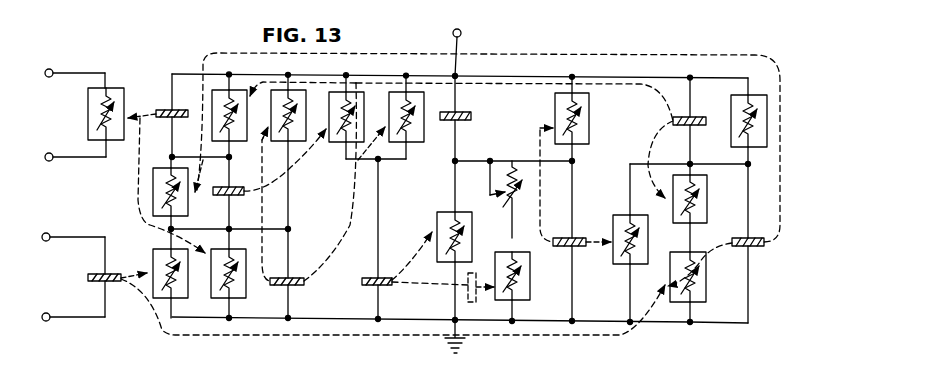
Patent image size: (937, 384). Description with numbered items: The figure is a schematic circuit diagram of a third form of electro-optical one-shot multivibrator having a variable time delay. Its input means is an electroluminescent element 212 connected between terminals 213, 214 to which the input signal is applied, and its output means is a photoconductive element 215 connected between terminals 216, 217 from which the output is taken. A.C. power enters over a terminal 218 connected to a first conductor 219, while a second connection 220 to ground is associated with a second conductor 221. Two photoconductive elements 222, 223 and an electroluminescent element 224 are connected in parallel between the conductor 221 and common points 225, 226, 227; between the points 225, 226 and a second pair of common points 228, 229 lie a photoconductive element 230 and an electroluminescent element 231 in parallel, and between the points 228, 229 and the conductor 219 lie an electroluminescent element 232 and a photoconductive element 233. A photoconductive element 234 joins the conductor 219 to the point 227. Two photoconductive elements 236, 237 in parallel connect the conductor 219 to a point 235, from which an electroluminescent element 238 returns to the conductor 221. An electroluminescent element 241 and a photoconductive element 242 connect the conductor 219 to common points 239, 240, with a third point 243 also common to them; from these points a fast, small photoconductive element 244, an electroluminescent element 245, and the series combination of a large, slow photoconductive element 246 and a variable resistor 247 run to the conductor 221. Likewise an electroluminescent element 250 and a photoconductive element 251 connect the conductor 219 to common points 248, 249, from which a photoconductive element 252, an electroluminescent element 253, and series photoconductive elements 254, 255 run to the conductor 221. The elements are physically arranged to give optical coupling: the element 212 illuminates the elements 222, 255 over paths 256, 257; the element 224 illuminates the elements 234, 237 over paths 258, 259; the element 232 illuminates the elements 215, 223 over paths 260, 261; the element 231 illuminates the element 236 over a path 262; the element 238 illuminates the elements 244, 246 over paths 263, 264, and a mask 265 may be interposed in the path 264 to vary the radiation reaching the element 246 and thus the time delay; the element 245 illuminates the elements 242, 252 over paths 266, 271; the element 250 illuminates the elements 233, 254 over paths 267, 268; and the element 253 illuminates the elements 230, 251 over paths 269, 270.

The electroluminescent element 212 is at (90, 273).
The terminal 213 is at (50, 312).
The terminal 214 is at (50, 232).
The photoconductive element 215 is at (88, 114).
The terminal 216 is at (58, 136).
The terminal 217 is at (64, 46).
The terminal 218 is at (461, 33).
The first conductor 219 is at (172, 72).
The second connection 220 is at (443, 342).
The second conductor 221 is at (700, 324).
The photoconductive element 222 is at (180, 298).
The photoconductive element 223 is at (240, 293).
The electroluminescent element 224 is at (292, 287).
The common point 225 is at (170, 229).
The common point 226 is at (228, 227).
The common point 227 is at (289, 228).
The common point 228 is at (171, 158).
The common point 229 is at (230, 158).
The photoconductive element 230 is at (153, 186).
The electroluminescent element 231 is at (240, 196).
The electroluminescent element 232 is at (166, 108).
The photoconductive element 233 is at (232, 75).
The photoconductive element 234 is at (290, 75).
The point 235 is at (380, 161).
The photoconductive element 236 is at (348, 75).
The photoconductive element 237 is at (408, 76).
The electroluminescent element 238 is at (361, 283).
The common point 239 is at (456, 159).
The common point 240 is at (574, 162).
The electroluminescent element 241 is at (468, 112).
The photoconductive element 242 is at (590, 114).
The third point 243 is at (491, 160).
The photoconductive element 244 is at (446, 210).
The electroluminescent element 245 is at (584, 248).
The photoconductive element 246 is at (525, 298).
The variable resistor 247 is at (510, 198).
The common point 248 is at (689, 163).
The common point 249 is at (748, 164).
The electroluminescent element 250 is at (683, 116).
The photoconductive element 251 is at (746, 92).
The photoconductive element 252 is at (617, 214).
The electroluminescent element 253 is at (752, 248).
The photoconductive element 254 is at (648, 232).
The photoconductive element 255 is at (700, 302).
The optical path 256 is at (142, 249).
The optical path 257 is at (255, 336).
The optical path 258 is at (263, 240).
The optical path 259 is at (329, 262).
The optical path 260 is at (142, 112).
The optical path 261 is at (140, 200).
The optical path 262 is at (298, 170).
The optical path 263 is at (420, 242).
The optical path 264 is at (426, 288).
The mask 265 is at (471, 272).
The optical path 266 is at (543, 182).
The optical path 267 is at (521, 82).
The optical path 268 is at (652, 128).
The optical path 269 is at (622, 54).
The optical path 270 is at (708, 246).
The optical path 271 is at (604, 227).